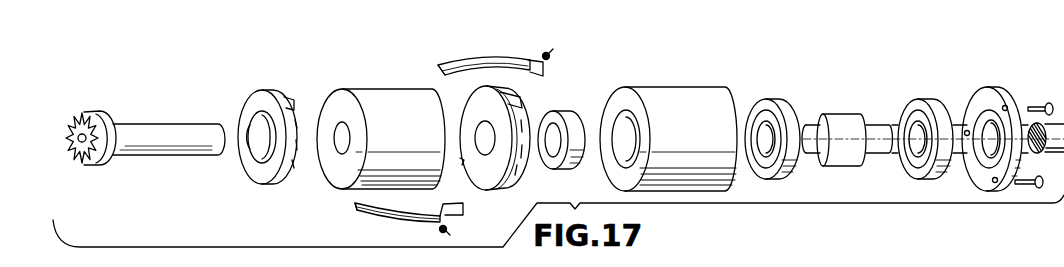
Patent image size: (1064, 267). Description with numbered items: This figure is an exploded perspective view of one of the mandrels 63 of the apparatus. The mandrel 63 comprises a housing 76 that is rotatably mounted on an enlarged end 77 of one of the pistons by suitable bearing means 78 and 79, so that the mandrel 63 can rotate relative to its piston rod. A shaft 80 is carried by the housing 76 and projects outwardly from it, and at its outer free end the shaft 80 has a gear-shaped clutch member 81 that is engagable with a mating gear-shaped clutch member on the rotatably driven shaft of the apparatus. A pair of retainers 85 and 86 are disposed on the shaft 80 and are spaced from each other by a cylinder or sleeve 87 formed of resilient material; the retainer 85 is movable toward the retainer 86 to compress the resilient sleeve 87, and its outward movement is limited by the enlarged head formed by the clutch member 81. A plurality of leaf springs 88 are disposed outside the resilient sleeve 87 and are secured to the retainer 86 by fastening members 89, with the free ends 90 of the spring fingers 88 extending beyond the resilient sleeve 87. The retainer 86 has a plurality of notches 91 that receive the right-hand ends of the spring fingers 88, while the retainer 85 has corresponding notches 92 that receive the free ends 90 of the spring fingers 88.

The mandrel 63 is at (832, 100).
The housing 76 is at (667, 97).
The enlarged end 77 is at (847, 115).
The bearing means 78 is at (773, 100).
The bearing means 79 is at (930, 100).
The shaft 80 is at (148, 132).
The gear-shaped clutch member 81 is at (86, 112).
The retainer 85 is at (257, 182).
The retainer 86 is at (525, 117).
The resilient sleeve 87 is at (390, 95).
The leaf springs 88 is at (475, 62).
The fastening members 89 is at (552, 53).
The free ends 90 is at (437, 65).
The notches 91 is at (526, 101).
The notches 92 is at (293, 102).